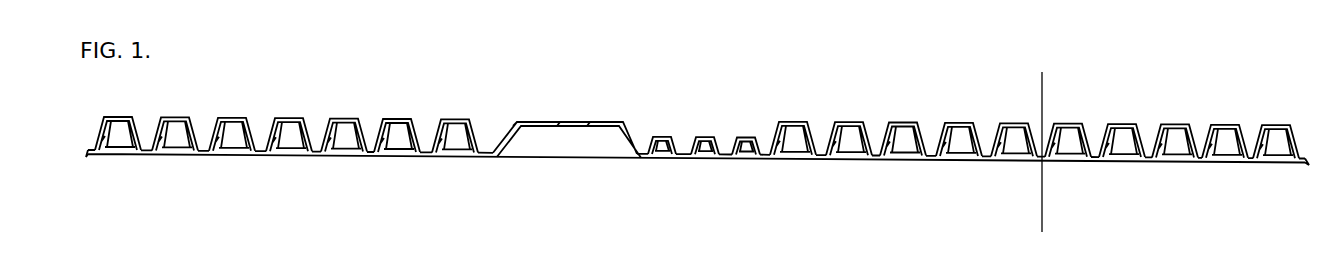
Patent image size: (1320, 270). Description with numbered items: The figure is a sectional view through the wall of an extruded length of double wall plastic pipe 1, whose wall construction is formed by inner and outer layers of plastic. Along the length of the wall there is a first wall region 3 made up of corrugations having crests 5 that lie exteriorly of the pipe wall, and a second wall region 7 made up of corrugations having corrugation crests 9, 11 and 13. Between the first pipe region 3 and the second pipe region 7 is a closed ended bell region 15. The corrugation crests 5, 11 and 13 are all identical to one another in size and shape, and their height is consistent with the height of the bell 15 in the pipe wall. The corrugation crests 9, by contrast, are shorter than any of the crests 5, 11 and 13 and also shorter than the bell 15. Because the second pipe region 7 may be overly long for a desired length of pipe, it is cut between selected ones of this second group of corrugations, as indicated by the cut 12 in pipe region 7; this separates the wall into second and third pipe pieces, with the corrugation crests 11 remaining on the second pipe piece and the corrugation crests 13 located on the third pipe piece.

The plastic pipe 1 is at (645, 88).
The first wall region 3 is at (390, 98).
The corrugation crests 5 is at (287, 120).
The second wall region 7 is at (853, 102).
The corrugation crests 9 is at (662, 137).
The corrugation crests 11 is at (955, 122).
The cut 12 is at (1042, 200).
The corrugation crests 13 is at (1070, 124).
The bell region 15 is at (553, 122).